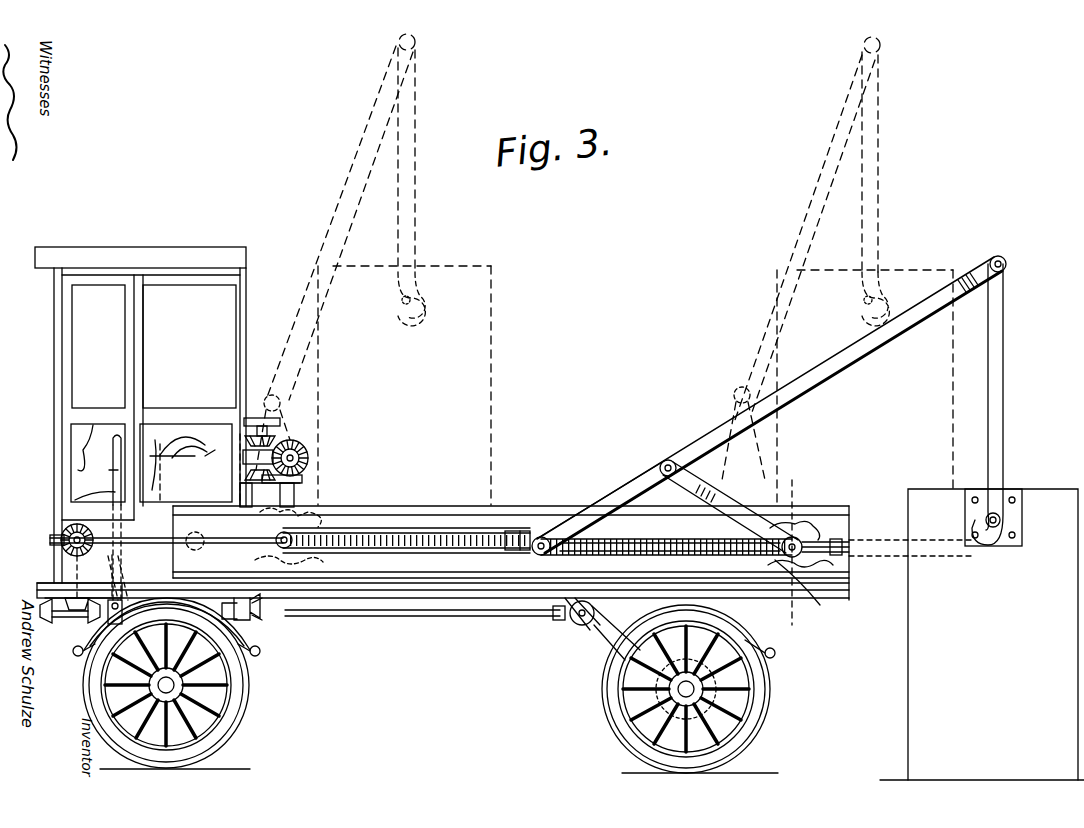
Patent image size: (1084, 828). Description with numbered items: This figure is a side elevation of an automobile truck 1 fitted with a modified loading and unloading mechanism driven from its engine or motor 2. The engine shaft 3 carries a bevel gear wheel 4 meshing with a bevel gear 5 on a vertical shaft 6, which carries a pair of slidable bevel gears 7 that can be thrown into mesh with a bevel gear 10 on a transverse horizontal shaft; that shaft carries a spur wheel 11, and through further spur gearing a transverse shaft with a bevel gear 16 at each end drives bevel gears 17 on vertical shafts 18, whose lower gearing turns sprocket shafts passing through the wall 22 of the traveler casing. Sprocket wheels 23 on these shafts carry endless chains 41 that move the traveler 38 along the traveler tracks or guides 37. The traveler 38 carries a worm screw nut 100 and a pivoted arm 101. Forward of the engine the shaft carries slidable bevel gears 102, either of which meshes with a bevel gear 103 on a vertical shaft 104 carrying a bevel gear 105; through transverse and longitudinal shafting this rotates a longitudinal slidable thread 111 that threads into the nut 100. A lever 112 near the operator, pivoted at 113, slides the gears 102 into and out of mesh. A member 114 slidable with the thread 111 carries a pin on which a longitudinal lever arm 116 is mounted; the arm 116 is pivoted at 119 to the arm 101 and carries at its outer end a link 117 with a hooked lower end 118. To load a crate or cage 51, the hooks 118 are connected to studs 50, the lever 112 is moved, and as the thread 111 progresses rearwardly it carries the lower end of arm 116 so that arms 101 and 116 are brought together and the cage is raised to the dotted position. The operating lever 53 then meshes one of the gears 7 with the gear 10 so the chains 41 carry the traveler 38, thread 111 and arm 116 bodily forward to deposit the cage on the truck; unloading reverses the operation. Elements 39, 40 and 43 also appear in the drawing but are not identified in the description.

The automobile truck 1 is at (480, 588).
The engine or motor 2 is at (230, 640).
The engine shaft 3 is at (400, 612).
The bevel gear wheel 4 is at (252, 608).
The bevel gear 5 is at (285, 598).
The vertical shaft 6 is at (300, 498).
The slidable bevel gears 7 is at (262, 440).
The bevel gear 10 is at (272, 450).
The spur wheel 11 is at (642, 557).
The bevel gear 16 is at (308, 455).
The bevel gears 17 is at (303, 474).
The vertical shafts 18 is at (262, 504).
The wall of the traveler casing 22 is at (400, 527).
The sprocket wheels 23 is at (292, 550).
The traveler tracks or guides 37 is at (445, 516).
The traveler 38 is at (808, 520).
The guide rods 39 is at (848, 570).
The rod 40 is at (830, 520).
The endless chains 41 is at (508, 532).
The collar 43 is at (842, 540).
The studs 50 is at (985, 520).
The crate or cage 51 is at (906, 692).
The operating lever 53 is at (182, 466).
The worm screw nut 100 is at (792, 556).
The pivoted arm 101 is at (692, 480).
The slidable bevel gears 102 is at (149, 649).
The bevel gear 103 is at (78, 610).
The vertical shaft 104 is at (76, 567).
The bevel gear 105 is at (60, 553).
The longitudinal slidable thread 111 is at (690, 556).
The lever 112 is at (112, 456).
The pivot 113 is at (118, 555).
The member 114 is at (545, 538).
The longitudinal lever arm 116 is at (726, 438).
The link 117 is at (990, 390).
The hooked lower end 118 is at (985, 548).
The pivot 119 is at (667, 460).